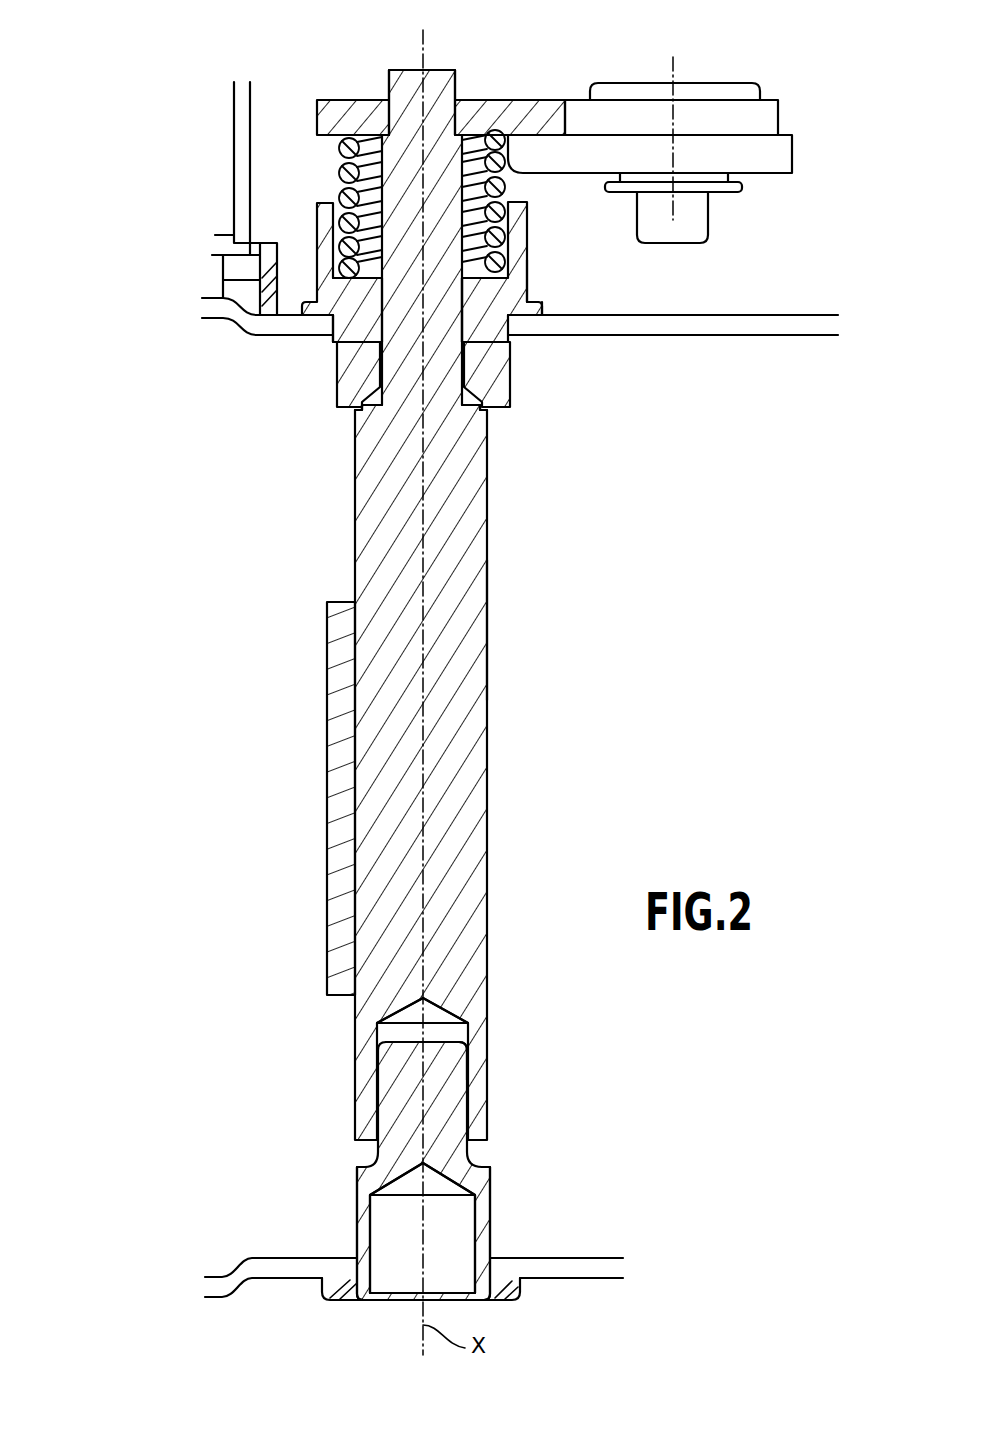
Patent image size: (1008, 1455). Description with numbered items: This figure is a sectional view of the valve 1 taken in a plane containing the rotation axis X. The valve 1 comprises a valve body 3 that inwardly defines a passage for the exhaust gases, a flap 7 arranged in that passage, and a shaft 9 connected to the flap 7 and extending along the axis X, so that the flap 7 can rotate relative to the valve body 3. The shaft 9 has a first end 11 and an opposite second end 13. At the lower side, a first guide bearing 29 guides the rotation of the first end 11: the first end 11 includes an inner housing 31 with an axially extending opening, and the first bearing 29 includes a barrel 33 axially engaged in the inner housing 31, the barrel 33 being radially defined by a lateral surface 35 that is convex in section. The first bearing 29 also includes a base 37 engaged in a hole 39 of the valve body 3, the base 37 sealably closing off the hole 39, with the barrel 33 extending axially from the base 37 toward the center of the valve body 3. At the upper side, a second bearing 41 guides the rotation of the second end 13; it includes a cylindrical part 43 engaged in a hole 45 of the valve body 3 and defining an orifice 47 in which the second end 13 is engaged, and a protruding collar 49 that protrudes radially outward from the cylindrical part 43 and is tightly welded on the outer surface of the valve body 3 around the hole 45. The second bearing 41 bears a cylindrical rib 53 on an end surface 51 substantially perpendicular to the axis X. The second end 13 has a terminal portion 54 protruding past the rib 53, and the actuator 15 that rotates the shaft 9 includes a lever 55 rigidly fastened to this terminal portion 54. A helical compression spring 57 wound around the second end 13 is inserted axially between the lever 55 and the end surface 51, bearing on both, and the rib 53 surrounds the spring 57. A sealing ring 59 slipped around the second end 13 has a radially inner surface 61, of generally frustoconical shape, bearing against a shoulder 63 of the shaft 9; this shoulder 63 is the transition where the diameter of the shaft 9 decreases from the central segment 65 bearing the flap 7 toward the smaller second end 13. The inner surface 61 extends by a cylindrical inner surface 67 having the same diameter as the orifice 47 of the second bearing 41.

The valve 1 is at (110, 130).
The valve body 3 is at (796, 325).
The flap 7 is at (340, 772).
The shaft 9 is at (474, 753).
The first end 11 is at (458, 1002).
The second end 13 is at (520, 232).
The actuator 15 is at (822, 123).
The first guide bearing 29 is at (328, 1183).
The inner housing 31 is at (462, 1035).
The barrel 33 is at (445, 1105).
The lateral surface 35 is at (467, 1064).
The base 37 is at (487, 1240).
The hole 39 is at (378, 1262).
The second bearing 41 is at (527, 272).
The cylindrical part 43 is at (342, 303).
The hole 45 is at (356, 300).
The orifice 47 is at (498, 328).
The protruding collar 49 is at (540, 312).
The end surface 51 is at (325, 262).
The cylindrical rib 53 is at (335, 218).
The terminal portion 54 is at (402, 85).
The lever 55 is at (487, 110).
The compression spring 57 is at (340, 150).
The sealing ring 59 is at (355, 384).
The radially inner surface 61 is at (478, 415).
The shoulder 63 is at (368, 410).
The central segment 65 is at (452, 636).
The cylindrical inner surface 67 is at (492, 374).